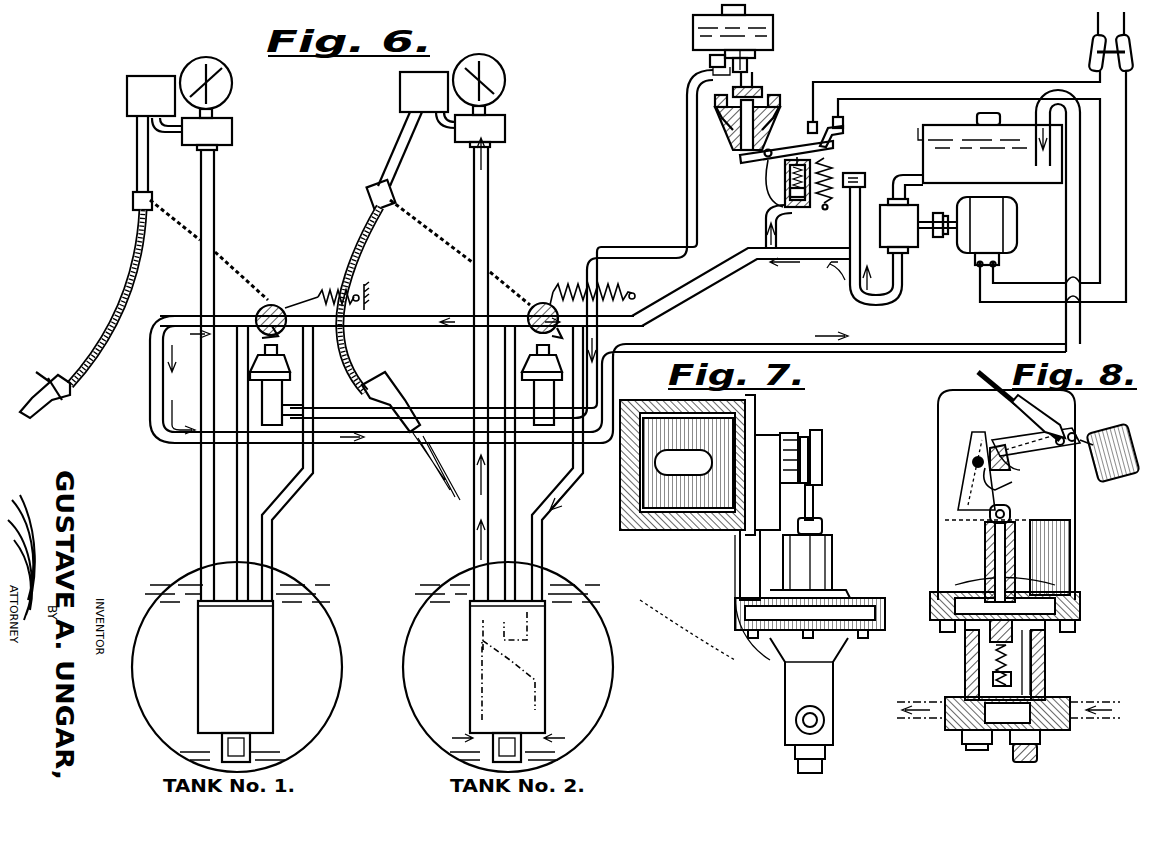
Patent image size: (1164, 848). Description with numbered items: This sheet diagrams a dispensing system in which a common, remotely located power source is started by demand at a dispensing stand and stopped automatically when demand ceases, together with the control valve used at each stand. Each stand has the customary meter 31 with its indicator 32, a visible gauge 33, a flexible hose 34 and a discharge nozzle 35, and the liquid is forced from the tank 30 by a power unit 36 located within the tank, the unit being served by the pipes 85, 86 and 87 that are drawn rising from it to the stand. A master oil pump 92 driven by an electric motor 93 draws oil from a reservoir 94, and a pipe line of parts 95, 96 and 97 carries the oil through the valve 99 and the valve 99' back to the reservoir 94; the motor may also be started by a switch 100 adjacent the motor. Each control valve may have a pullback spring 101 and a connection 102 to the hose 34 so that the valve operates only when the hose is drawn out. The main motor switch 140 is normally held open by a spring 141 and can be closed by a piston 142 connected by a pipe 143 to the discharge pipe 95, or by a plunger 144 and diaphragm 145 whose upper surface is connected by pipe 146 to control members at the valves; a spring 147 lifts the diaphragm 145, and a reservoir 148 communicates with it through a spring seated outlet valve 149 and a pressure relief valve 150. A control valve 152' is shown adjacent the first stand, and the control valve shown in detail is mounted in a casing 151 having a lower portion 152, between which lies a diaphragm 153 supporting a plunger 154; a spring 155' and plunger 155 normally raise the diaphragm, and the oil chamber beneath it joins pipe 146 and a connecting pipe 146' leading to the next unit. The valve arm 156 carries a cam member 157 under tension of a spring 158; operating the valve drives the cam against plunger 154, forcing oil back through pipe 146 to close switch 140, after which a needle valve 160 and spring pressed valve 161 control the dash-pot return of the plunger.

In FIG. 6, the tank 30 is at (175, 583).
In FIG. 6, the meter 31 is at (222, 133).
In FIG. 6, the indicator 32 is at (212, 62).
In FIG. 6, the visible gauge 33 is at (140, 90).
In FIG. 6, the flexible hose 34 is at (125, 303).
In FIG. 6, the discharge nozzle 35 is at (40, 402).
In FIG. 6, the power unit 36 is at (381, 681).
In FIG. 6, the return pipe 85 is at (306, 476).
In FIG. 6, the supply pipe 86 is at (240, 470).
In FIG. 6, the gauge pipe 87 is at (210, 485).
In FIG. 6, the master oil pump 92 is at (908, 240).
In FIG. 6, the electric motor 93 is at (1012, 232).
In FIG. 6, the reservoir 94 is at (1020, 178).
In FIG. 6, the pipe 95 is at (683, 288).
In FIG. 6, the pipe 96 is at (417, 315).
In FIG. 6, the pipe 97 is at (150, 395).
In FIG. 6, the valve 99 is at (529, 311).
In FIG. 7, the valve 99 is at (688, 463).
In FIG. 6, the valve 99' is at (256, 311).
In FIG. 6, the switch 100 is at (1092, 44).
In FIG. 6, the pullback spring 101 is at (322, 292).
In FIG. 8, the pullback spring 101 is at (1115, 432).
In FIG. 6, the connection 102 is at (185, 230).
In FIG. 8, the connection 102 is at (975, 375).
In FIG. 6, the main motor switch 140 is at (844, 128).
In FIG. 6, the spring 141 is at (833, 170).
In FIG. 6, the piston 142 is at (790, 196).
In FIG. 6, the pipe 143 is at (766, 228).
In FIG. 6, the plunger 144 is at (748, 160).
In FIG. 6, the diaphragm 145 is at (762, 100).
In FIG. 6, the pipe 146 is at (644, 244).
In FIG. 8, the pipe 146 is at (1101, 729).
In FIG. 6, the connecting pipe 146' is at (441, 393).
In FIG. 8, the connecting pipe 146' is at (912, 729).
In FIG. 6, the spring 147 is at (720, 112).
In FIG. 6, the reservoir 148 is at (775, 25).
In FIG. 6, the spring seated outlet valve 149 is at (755, 54).
In FIG. 6, the pressure relief valve 150 is at (712, 60).
In FIG. 7, the casing 151 is at (685, 520).
In FIG. 8, the casing 151 is at (1050, 555).
In FIG. 6, the lower portion 152 is at (542, 405).
In FIG. 7, the lower portion 152 is at (802, 654).
In FIG. 8, the lower portion 152 is at (1025, 675).
In FIG. 6, the regulator valve 152' is at (297, 385).
In FIG. 8, the diaphragm 153 is at (1050, 622).
In FIG. 8, the plunger 154 is at (995, 560).
In FIG. 8, the plunger 155 is at (963, 653).
In FIG. 8, the spring 155' is at (1069, 662).
In FIG. 7, the valve arm 156 is at (820, 440).
In FIG. 8, the valve arm 156 is at (1030, 455).
In FIG. 7, the cam member 157 is at (812, 497).
In FIG. 8, the cam member 157 is at (968, 487).
In FIG. 8, the spring 158 is at (975, 455).
In FIG. 8, the needle valve 160 is at (1040, 735).
In FIG. 8, the spring pressed valve 161 is at (965, 735).